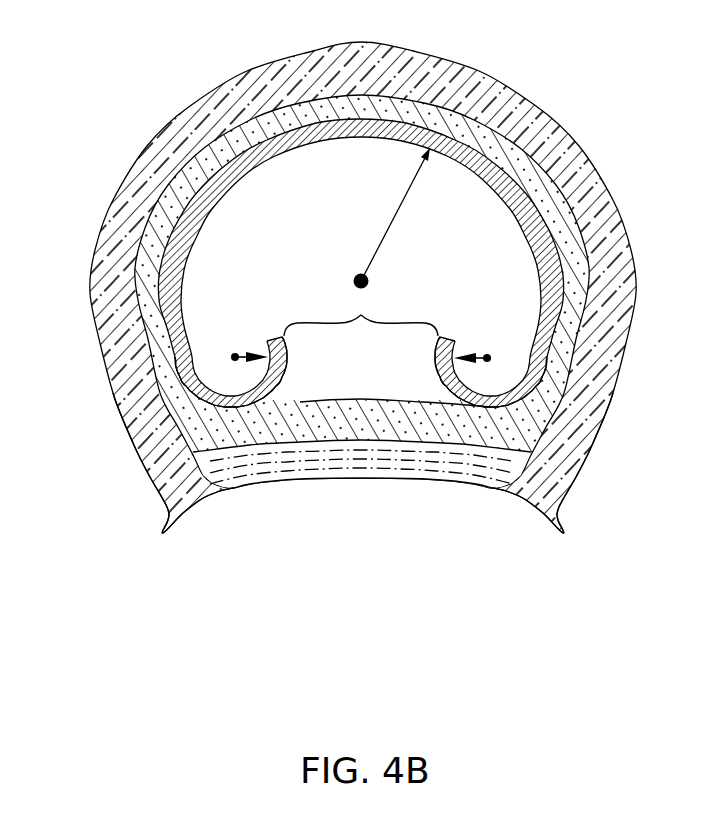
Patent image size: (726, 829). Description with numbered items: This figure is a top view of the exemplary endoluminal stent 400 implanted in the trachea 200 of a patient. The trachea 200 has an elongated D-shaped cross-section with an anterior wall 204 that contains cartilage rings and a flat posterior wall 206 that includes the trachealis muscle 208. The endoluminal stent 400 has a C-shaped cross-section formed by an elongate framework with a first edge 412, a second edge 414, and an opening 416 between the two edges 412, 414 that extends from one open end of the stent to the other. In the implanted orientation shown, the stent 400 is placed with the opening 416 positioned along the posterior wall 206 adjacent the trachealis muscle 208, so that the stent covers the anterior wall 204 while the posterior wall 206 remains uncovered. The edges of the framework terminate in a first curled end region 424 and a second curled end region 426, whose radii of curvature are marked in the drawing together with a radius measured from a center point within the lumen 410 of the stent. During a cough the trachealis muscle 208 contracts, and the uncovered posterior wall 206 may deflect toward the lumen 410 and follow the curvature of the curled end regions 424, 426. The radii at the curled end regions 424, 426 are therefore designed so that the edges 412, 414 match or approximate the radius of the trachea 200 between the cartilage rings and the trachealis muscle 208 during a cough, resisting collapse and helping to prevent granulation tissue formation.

The trachea 200 is at (538, 73).
The anterior wall 204 is at (300, 168).
The posterior wall 206 is at (336, 400).
The trachealis muscle 208 is at (328, 463).
The endoluminal stent 400 is at (573, 133).
The lumen 410 is at (283, 138).
The first edge 412 is at (282, 336).
The second edge 414 is at (440, 336).
The opening 416 is at (361, 242).
The first curled end region 424 is at (300, 402).
The second curled end region 426 is at (490, 407).